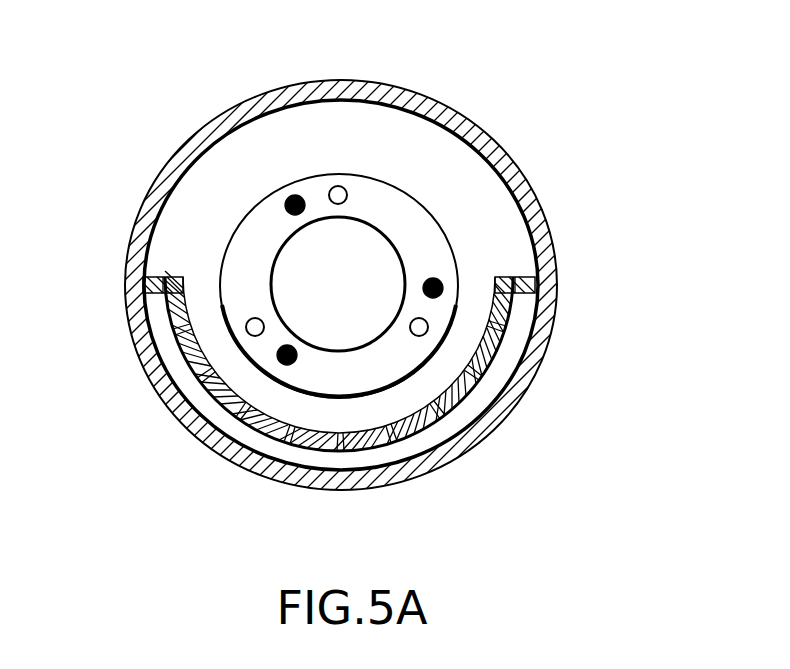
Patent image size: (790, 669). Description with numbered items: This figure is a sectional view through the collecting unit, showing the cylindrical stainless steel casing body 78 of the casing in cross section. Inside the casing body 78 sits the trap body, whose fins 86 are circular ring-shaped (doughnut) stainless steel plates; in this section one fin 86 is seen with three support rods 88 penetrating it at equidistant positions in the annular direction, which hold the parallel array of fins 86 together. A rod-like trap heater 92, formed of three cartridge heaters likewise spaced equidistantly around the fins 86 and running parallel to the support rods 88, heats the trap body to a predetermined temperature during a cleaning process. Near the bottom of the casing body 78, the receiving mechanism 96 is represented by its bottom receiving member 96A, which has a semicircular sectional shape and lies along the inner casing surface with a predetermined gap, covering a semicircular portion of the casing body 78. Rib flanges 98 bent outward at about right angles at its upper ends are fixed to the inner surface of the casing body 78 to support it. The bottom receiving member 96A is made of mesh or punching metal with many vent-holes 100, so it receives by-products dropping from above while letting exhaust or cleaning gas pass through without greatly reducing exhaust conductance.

The casing body 78 is at (488, 138).
The fins 86 is at (386, 170).
The support rods 88 is at (338, 186).
The trap heater 92 is at (288, 196).
The receiving mechanism 96 is at (411, 380).
The bottom receiving member 96A is at (500, 400).
The rib flanges 98 is at (127, 272).
The vent-holes 100 is at (197, 375).